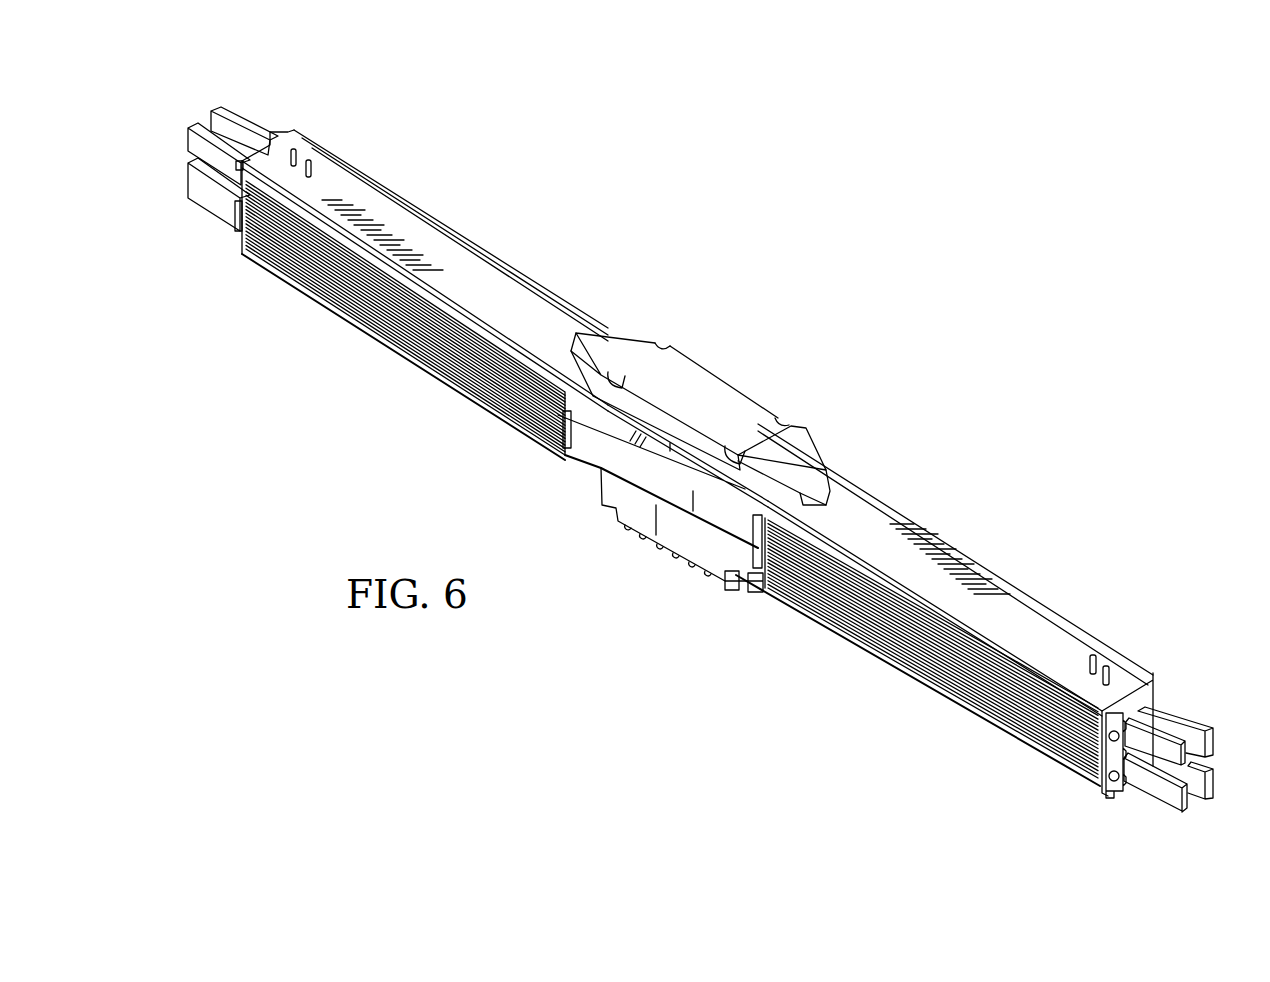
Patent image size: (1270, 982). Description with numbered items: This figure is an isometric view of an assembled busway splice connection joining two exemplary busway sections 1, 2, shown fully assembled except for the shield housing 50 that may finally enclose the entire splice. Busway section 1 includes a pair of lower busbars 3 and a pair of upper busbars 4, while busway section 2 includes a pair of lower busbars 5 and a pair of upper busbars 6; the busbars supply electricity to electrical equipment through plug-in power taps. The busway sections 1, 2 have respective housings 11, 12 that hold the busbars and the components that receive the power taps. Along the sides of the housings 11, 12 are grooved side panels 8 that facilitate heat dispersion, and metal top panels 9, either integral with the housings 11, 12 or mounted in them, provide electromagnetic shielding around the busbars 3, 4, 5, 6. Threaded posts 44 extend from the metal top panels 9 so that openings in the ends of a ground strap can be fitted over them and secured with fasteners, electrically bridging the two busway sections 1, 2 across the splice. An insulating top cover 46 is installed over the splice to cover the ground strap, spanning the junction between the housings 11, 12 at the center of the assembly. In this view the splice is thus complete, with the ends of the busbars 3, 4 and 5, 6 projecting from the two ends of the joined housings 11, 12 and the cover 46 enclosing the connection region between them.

The busway section 1 is at (486, 205).
The busway section 2 is at (930, 474).
The lower busbars 3 is at (205, 188).
The upper busbars 4 is at (240, 125).
The lower busbars 5 is at (1199, 796).
The upper busbars 6 is at (1196, 718).
The grooved side panels 8 is at (1000, 703).
The metal top panels 9 is at (972, 577).
The housing 11 is at (371, 354).
The housing 12 is at (879, 680).
The threaded posts 44 is at (1099, 656).
The insulating top cover 46 is at (725, 395).
The shield housing 50 is at (678, 528).